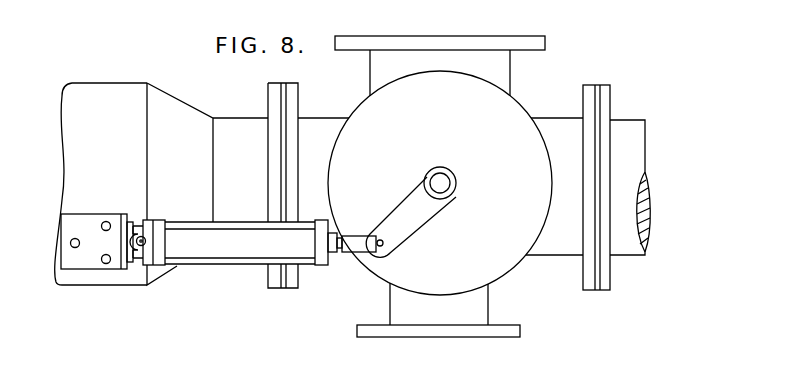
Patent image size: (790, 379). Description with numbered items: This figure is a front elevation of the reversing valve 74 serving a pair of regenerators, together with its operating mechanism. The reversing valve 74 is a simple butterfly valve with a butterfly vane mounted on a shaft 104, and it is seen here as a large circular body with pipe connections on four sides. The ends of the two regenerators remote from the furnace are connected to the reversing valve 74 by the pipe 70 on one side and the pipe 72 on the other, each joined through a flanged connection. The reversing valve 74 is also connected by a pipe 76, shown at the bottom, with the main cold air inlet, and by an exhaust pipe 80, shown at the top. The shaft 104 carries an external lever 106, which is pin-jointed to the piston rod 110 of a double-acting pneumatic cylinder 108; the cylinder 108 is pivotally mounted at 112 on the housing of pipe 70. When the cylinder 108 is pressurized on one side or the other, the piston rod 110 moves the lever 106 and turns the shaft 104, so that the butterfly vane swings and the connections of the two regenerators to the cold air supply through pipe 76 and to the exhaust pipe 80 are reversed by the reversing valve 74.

The pipe 70 is at (113, 93).
The pipe 72 is at (620, 133).
The reversing valve 74 is at (351, 101).
The pipe 76 is at (443, 329).
The exhaust pipe 80 is at (500, 66).
The shaft 104 is at (443, 182).
The external lever 106 is at (403, 221).
The double-acting pneumatic cylinder 108 is at (247, 248).
The piston rod 110 is at (362, 245).
The pivotal mounting 112 is at (143, 239).